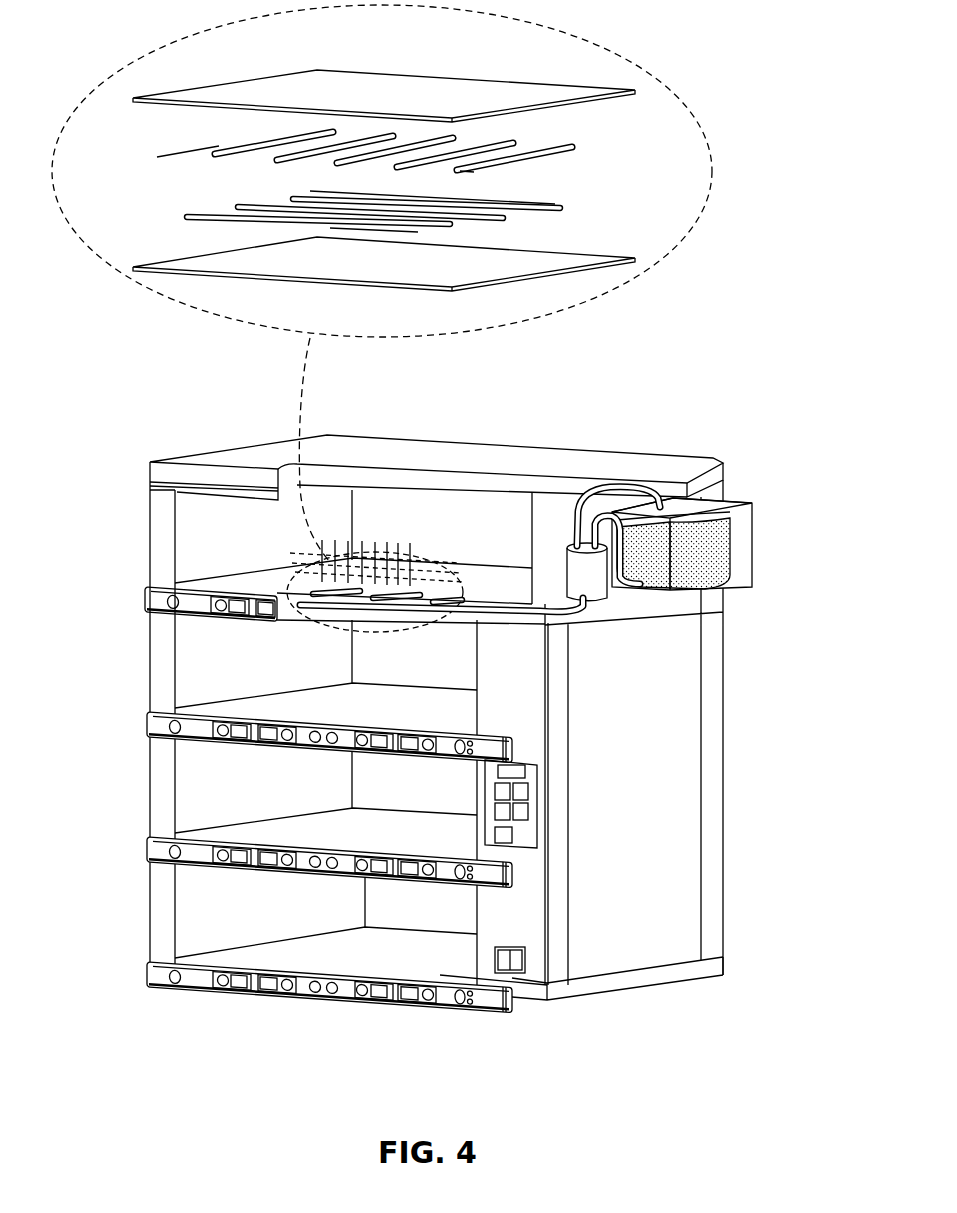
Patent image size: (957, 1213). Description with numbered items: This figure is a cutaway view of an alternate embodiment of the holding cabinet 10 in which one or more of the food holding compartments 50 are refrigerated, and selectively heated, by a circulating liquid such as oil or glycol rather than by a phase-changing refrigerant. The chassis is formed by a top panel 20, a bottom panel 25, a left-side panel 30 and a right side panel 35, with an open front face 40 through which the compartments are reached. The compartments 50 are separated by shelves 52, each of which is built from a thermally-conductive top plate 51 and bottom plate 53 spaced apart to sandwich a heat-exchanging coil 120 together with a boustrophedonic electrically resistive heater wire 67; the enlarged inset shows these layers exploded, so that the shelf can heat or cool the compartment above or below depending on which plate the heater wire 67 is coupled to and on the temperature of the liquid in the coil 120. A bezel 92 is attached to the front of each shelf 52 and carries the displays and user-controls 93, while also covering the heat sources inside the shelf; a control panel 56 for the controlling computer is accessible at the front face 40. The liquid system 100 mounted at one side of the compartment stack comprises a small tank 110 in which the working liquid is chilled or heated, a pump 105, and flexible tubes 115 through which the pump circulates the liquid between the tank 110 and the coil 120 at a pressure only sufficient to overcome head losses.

The holding cabinet 10 is at (644, 327).
The top panel 20 is at (630, 460).
The bottom panel 25 is at (610, 990).
The left-side panel 30 is at (133, 507).
The right side panel 35 is at (680, 893).
The open front face 40 is at (140, 1003).
The food holding compartment 50 is at (190, 543).
The top plate 51 is at (560, 92).
The shelf 52 is at (293, 570).
The bottom plate 53 is at (560, 260).
The control panel 56 is at (523, 837).
The heater wire 67 is at (573, 145).
The bezel 92 is at (195, 727).
The displays and user-controls 93 is at (197, 858).
The fluid supply system 100 is at (755, 480).
The pump 105 is at (597, 588).
The tank 110 is at (700, 585).
The flexible tubes 115 is at (574, 503).
The cooling coil 120 is at (560, 205).